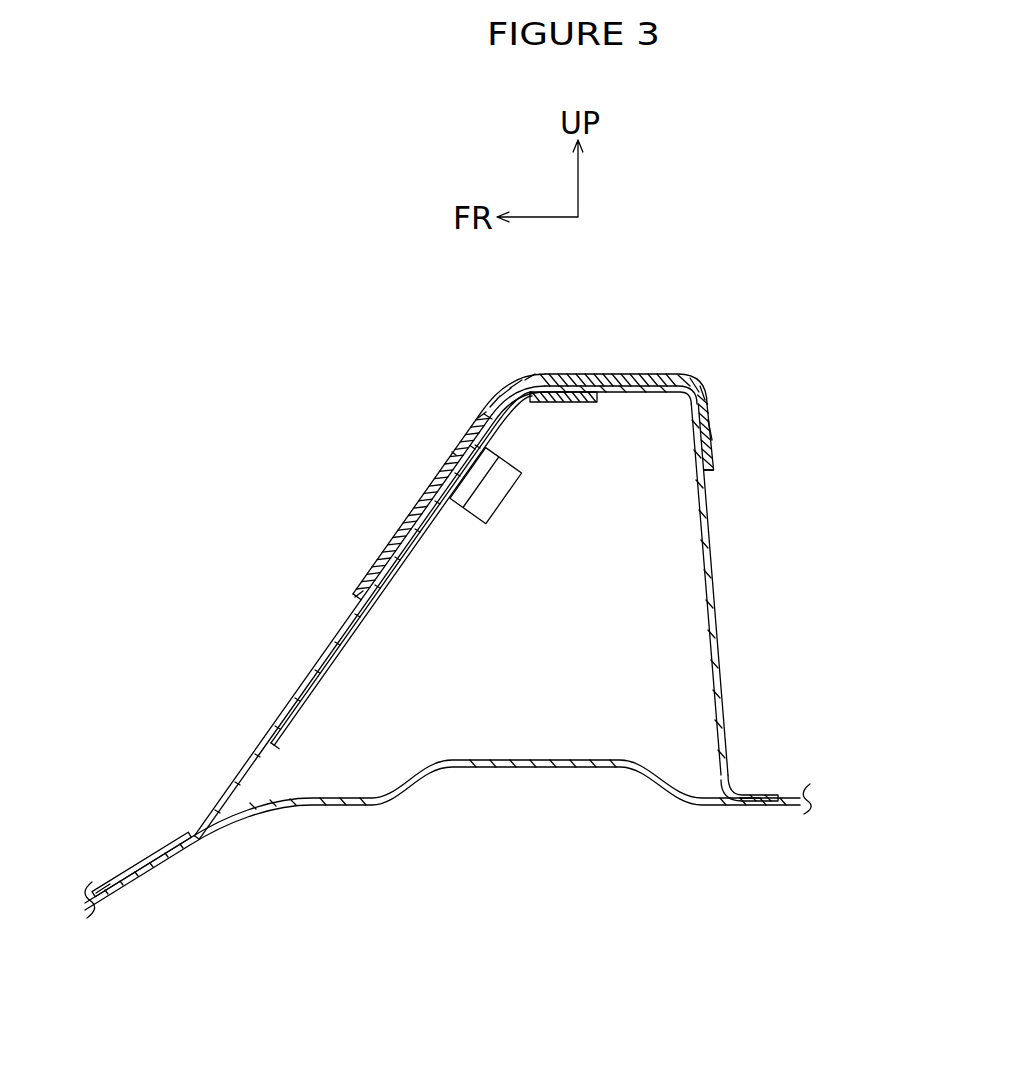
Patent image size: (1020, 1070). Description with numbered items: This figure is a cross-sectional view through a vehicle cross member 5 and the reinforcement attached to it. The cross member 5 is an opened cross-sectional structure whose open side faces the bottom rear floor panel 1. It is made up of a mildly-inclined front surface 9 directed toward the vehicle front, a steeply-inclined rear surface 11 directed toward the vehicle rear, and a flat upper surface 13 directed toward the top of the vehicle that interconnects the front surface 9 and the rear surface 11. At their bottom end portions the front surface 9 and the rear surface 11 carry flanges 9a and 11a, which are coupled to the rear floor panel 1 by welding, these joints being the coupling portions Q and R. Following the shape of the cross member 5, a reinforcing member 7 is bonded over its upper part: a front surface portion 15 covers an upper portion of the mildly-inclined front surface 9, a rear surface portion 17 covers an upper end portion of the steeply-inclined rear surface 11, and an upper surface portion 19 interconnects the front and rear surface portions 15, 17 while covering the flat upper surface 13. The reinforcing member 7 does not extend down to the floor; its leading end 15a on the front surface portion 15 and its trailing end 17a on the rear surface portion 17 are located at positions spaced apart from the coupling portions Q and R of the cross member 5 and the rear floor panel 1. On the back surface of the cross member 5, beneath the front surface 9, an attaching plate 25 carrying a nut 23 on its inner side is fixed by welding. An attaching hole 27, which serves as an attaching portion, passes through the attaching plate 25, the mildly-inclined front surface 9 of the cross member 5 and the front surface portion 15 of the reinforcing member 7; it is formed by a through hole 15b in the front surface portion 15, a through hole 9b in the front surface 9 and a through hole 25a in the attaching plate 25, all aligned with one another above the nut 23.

The rear floor panel 1 is at (527, 766).
The cross member 5 is at (731, 618).
The reinforcing member 7 is at (724, 438).
The mildly-inclined front surface 9 is at (317, 667).
The flange 9a is at (152, 860).
The through hole 9b is at (460, 462).
The steeply-inclined rear surface 11 is at (718, 675).
The flange 11a is at (760, 797).
The flat upper surface 13 is at (652, 374).
The front surface portion 15 is at (396, 533).
The leading end 15a is at (358, 597).
The through hole 15b is at (473, 440).
The rear surface portion 17 is at (706, 414).
The trailing end 17a is at (708, 474).
The upper surface portion 19 is at (578, 374).
The nut 23 is at (522, 458).
The attaching plate 25 is at (417, 551).
The through hole 25a is at (440, 480).
The attaching hole 27 is at (473, 322).
The coupling portion Q is at (105, 858).
The coupling portion R is at (764, 817).